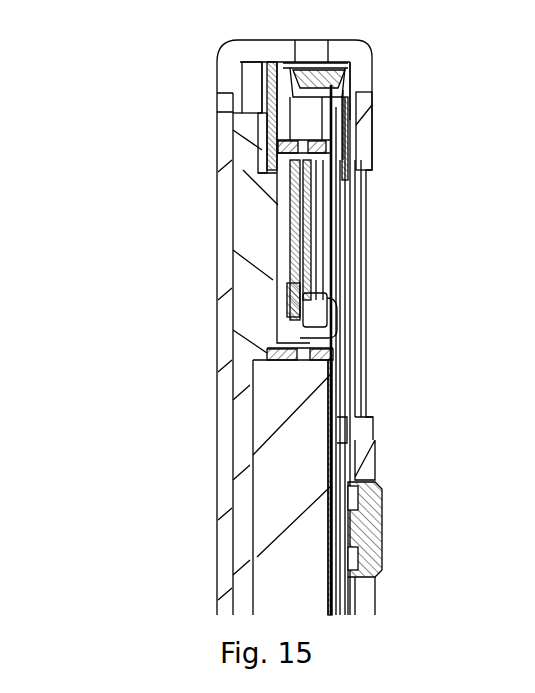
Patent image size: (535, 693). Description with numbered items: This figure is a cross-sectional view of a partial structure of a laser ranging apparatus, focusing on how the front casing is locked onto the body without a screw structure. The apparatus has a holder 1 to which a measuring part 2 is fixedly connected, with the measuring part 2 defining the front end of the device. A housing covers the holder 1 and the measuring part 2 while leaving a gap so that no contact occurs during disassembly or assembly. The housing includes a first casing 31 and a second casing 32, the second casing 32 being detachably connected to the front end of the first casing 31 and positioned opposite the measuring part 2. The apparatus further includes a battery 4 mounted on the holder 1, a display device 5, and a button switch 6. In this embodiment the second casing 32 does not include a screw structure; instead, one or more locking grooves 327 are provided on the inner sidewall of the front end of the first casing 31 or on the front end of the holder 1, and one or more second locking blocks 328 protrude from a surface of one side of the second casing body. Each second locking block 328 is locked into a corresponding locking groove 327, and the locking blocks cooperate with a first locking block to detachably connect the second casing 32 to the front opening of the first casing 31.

The holder 1 is at (247, 308).
The measuring part 2 is at (322, 207).
The battery 4 is at (272, 476).
The display device 5 is at (348, 286).
The button switch 6 is at (363, 515).
The first casing 31 is at (228, 414).
The second casing 32 is at (356, 77).
The locking groove 327 is at (270, 130).
The second locking block 328 is at (268, 87).